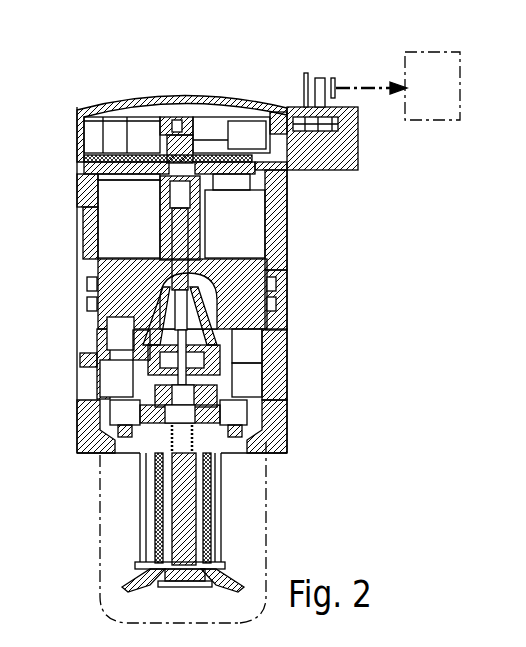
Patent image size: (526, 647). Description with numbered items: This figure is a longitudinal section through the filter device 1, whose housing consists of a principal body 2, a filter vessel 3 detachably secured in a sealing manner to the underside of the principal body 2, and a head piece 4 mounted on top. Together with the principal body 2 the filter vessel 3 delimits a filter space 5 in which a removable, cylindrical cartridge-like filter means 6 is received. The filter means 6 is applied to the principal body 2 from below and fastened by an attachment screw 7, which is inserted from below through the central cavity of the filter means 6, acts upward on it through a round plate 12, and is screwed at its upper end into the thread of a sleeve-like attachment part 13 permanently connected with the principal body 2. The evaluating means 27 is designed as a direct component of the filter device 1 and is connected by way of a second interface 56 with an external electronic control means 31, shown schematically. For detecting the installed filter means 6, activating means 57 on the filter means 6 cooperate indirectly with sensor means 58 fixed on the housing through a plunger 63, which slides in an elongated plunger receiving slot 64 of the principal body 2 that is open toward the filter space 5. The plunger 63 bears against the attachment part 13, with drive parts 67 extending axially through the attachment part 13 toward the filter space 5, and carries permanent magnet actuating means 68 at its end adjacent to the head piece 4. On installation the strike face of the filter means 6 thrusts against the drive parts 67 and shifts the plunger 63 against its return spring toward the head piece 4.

The filter device 1 is at (298, 292).
The principal body 2 is at (107, 265).
The filter vessel 3 is at (103, 534).
The head piece 4 is at (80, 108).
The filter space 5 is at (258, 538).
The filter means 6 is at (207, 483).
The attachment screw 7 is at (185, 513).
The round plate 12 is at (142, 577).
The attachment part 13 is at (227, 423).
The evaluating means 27 is at (333, 170).
The external electronic control means 31 is at (462, 80).
The second interface 56 is at (315, 107).
The activating means 57 is at (152, 452).
The sensor means 58 is at (183, 163).
The plunger 63 is at (118, 313).
The plunger receiving slot 64 is at (180, 272).
The drive parts 67 is at (147, 420).
The actuating means 68 is at (178, 192).